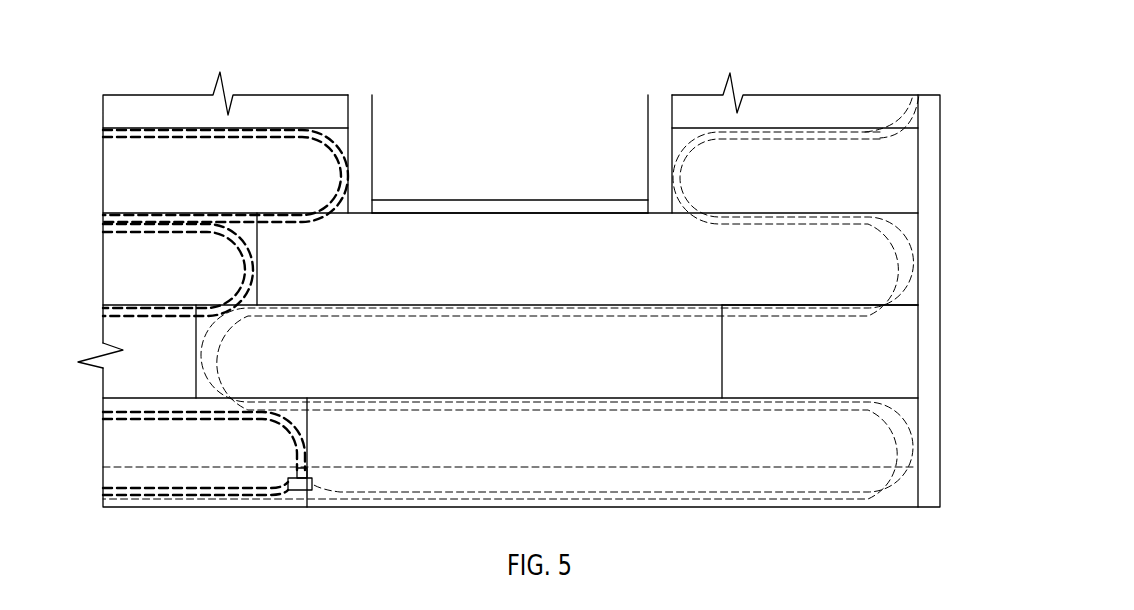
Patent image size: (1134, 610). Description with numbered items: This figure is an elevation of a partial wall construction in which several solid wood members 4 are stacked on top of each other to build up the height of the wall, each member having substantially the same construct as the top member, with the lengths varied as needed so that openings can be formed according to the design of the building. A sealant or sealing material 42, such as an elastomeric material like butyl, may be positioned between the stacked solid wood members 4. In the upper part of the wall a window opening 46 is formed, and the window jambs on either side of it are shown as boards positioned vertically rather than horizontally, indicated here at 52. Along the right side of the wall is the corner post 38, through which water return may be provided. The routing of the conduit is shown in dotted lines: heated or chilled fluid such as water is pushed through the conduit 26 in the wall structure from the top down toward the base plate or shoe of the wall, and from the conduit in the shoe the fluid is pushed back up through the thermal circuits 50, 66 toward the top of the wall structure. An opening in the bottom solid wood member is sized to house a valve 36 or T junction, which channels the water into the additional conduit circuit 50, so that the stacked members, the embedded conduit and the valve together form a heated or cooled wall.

The solid wood member 4 is at (123, 165).
The conduit 26 is at (279, 129).
The thermal circuit 66 is at (233, 138).
The upright support member 52 is at (373, 132).
The window opening 46 is at (522, 155).
The thermal circuit 50 is at (783, 138).
The sealant or sealing material 42 is at (819, 277).
The corner post 38 is at (928, 238).
The valve 36 is at (300, 477).